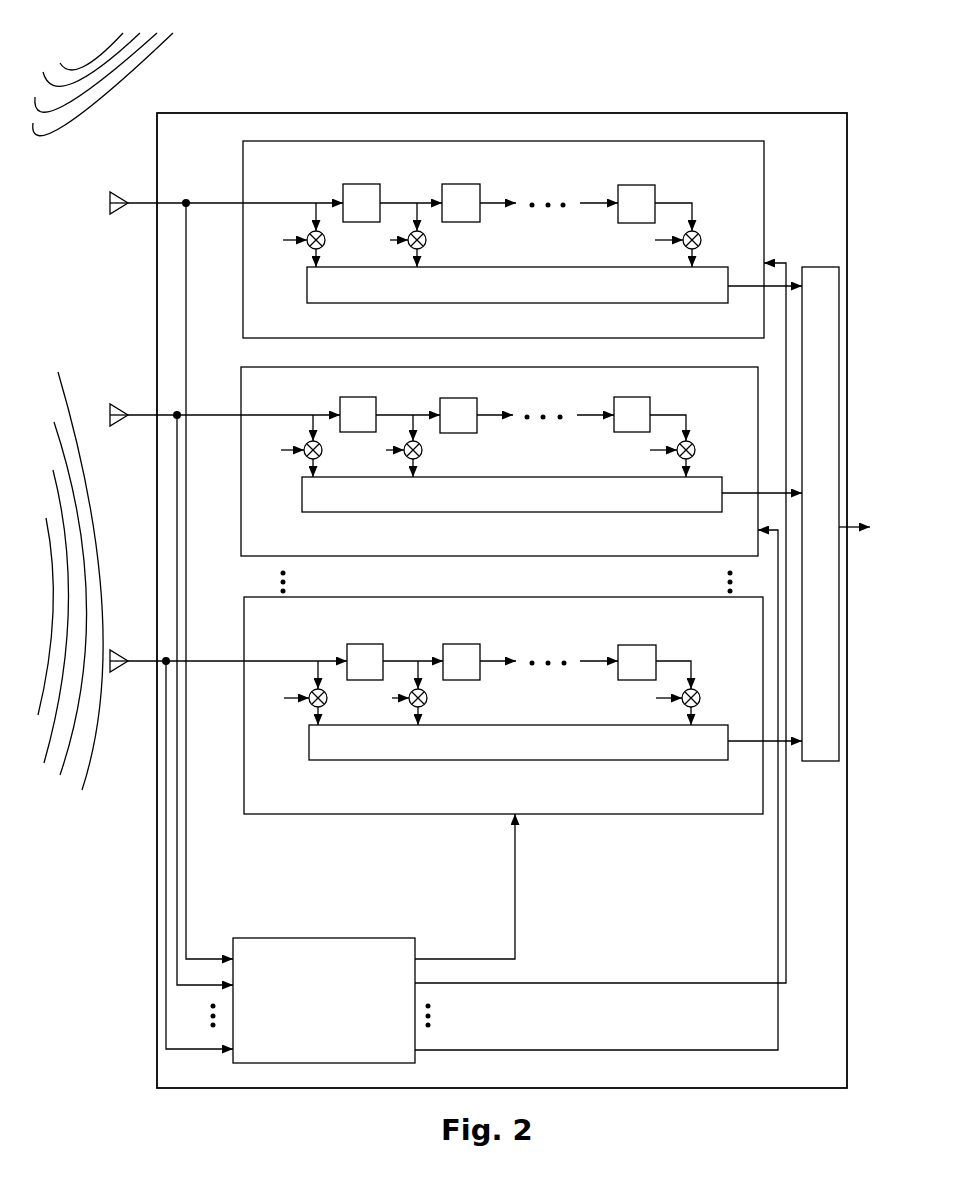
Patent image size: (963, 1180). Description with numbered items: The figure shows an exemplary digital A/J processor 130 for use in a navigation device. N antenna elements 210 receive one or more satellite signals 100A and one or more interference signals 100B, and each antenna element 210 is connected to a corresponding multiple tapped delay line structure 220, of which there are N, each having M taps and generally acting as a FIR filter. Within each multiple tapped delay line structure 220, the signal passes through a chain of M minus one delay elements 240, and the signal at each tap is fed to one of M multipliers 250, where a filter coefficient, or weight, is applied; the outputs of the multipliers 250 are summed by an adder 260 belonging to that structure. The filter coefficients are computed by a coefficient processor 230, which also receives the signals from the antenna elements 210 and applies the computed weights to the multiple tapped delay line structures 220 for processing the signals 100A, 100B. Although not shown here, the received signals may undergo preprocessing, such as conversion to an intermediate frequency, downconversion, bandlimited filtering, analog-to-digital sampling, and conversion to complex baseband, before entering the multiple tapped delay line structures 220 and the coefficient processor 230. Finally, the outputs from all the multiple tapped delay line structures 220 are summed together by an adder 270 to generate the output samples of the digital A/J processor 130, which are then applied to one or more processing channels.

The satellite signals 100A is at (64, 386).
The interference signals 100B is at (169, 56).
The digital A/J processor 130 is at (822, 113).
The antenna element 210 is at (120, 209).
The multiple tapped delay line structure 220 is at (242, 287).
The coefficient processor 230 is at (415, 944).
The delay element 240 is at (378, 184).
The multiplier 250 is at (310, 247).
The adder 260 is at (708, 304).
The adder 270 is at (840, 346).